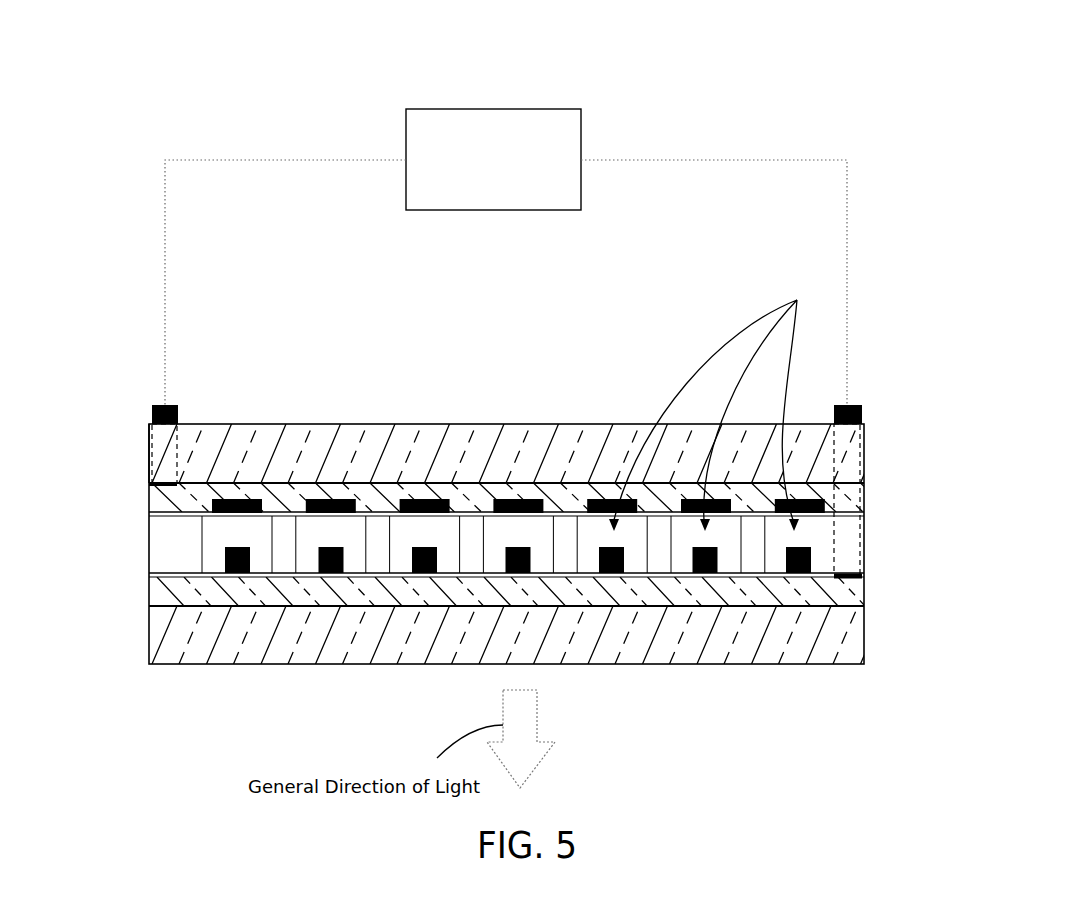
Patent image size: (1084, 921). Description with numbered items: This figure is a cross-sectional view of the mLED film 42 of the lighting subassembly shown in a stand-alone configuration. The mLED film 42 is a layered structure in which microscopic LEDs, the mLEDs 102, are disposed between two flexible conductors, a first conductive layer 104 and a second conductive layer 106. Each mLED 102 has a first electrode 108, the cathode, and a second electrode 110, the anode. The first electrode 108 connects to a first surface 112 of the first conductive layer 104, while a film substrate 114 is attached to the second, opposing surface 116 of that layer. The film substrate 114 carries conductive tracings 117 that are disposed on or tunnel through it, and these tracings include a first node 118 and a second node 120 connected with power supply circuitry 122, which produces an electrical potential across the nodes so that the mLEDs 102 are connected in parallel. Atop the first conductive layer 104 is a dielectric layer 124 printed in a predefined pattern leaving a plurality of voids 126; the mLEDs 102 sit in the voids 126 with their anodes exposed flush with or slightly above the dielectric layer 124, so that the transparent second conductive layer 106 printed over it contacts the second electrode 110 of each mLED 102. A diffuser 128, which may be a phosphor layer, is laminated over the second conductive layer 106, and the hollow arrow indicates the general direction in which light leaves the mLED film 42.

The mLED film 42 is at (478, 363).
The mLED 102 is at (721, 409).
The first conductive layer 104 is at (148, 500).
The second conductive layer 106 is at (148, 592).
The first electrode 108 is at (340, 499).
The second electrode 110 is at (518, 574).
The first surface 112 is at (815, 517).
The film substrate 114 is at (148, 443).
The second, opposing surface 116 is at (520, 477).
The conductive tracings 117 is at (165, 447).
The first node 118 is at (163, 405).
The second node 120 is at (847, 427).
The power supply circuitry 122 is at (490, 108).
The dielectric layer 124 is at (148, 545).
The voids 126 is at (298, 548).
The diffuser 128 is at (148, 650).